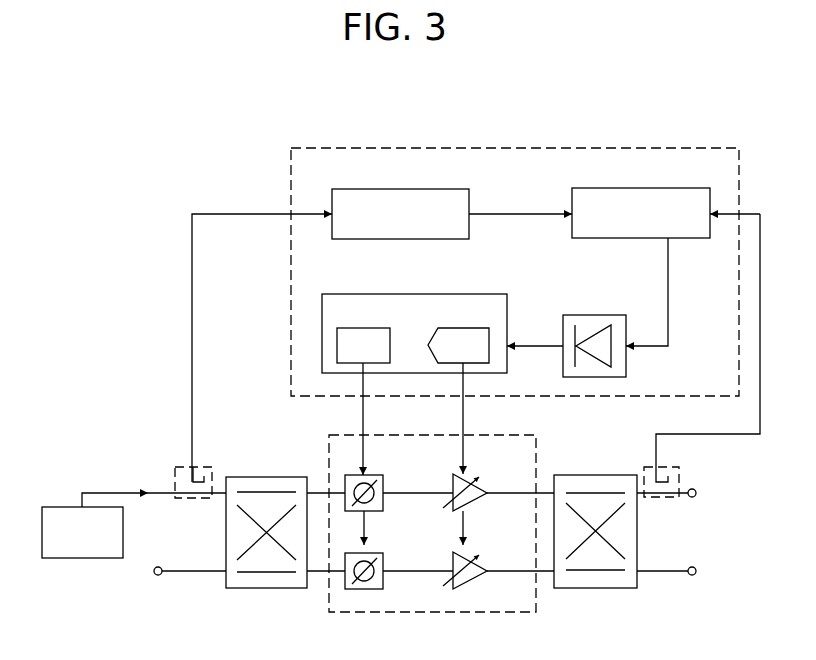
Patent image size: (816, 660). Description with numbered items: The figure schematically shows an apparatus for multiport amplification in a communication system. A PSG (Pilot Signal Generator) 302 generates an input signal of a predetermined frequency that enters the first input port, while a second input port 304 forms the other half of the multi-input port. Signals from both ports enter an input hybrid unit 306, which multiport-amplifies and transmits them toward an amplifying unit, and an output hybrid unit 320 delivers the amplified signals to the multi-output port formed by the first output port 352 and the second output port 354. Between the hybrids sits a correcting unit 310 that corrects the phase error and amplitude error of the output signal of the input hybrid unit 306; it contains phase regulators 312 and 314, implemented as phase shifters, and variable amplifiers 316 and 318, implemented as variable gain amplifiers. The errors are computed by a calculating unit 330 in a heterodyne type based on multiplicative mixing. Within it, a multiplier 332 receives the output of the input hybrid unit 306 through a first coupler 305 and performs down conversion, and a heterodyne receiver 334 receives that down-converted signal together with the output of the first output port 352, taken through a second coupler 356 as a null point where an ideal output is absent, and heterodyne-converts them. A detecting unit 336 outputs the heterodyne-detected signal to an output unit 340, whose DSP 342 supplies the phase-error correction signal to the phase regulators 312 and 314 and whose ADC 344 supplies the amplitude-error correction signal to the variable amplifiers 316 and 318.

The PSG (Pilot Signal Generator) 302 is at (82, 558).
The input port 2 304 is at (158, 575).
The coupler 1 305 is at (201, 468).
The input hybrid unit 306 is at (259, 477).
The correcting unit 310 is at (499, 436).
The phase regulator 312 is at (376, 477).
The phase regulator 314 is at (376, 556).
The variable amplifier 316 is at (484, 478).
The variable amplifier 318 is at (484, 557).
The output hybrid unit 320 is at (585, 476).
The calculating unit 330 is at (678, 149).
The multiplier 332 is at (418, 190).
The heterodyne receiver 334 is at (656, 188).
The detecting unit 336 is at (581, 316).
The output unit 340 is at (463, 295).
The DSP (Digital Signal Processor) 342 is at (352, 329).
The ADC (Analog to Digital Converter) 344 is at (450, 329).
The output port 1 352 is at (696, 493).
The output port 2 354 is at (696, 571).
The coupler 2 356 is at (671, 468).